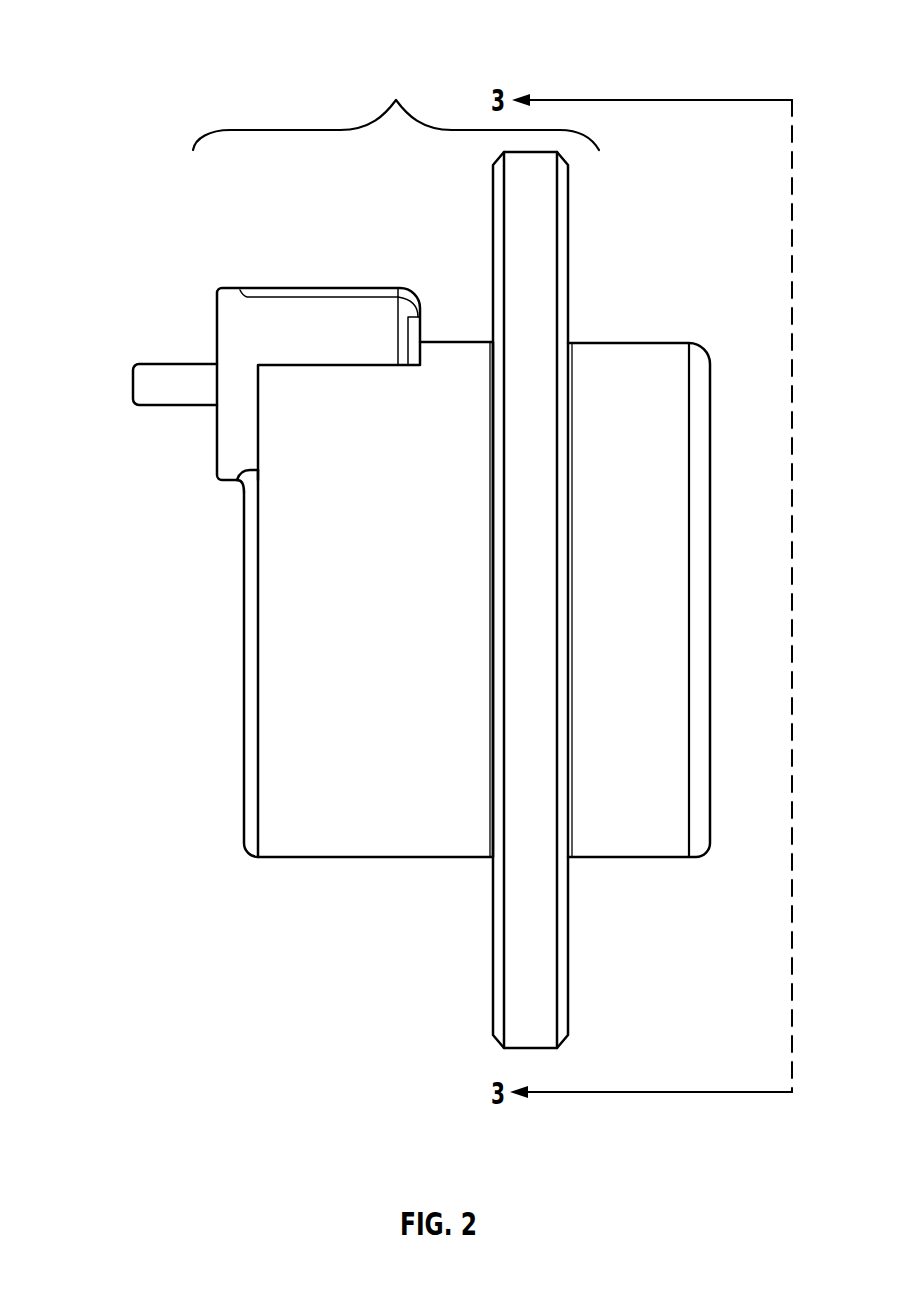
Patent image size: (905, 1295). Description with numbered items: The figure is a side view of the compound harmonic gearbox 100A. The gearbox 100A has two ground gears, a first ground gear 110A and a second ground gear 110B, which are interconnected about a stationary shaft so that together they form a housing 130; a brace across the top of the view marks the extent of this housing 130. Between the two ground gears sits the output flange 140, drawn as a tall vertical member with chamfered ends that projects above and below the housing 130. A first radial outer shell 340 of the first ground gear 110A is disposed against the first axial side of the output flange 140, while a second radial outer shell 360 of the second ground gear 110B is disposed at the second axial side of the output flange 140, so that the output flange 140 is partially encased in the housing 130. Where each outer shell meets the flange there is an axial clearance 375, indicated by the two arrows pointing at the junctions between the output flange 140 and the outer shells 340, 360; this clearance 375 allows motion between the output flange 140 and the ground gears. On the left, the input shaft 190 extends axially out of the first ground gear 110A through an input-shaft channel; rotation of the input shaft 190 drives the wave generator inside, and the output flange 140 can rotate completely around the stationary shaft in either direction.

The compound harmonic gearbox 100A is at (160, 44).
The housing 130 is at (396, 108).
The output flange 140 is at (493, 880).
The first ground gear 110A is at (290, 733).
The second ground gear 110B is at (610, 822).
The first radial outer shell 340 is at (244, 582).
The second radial outer shell 360 is at (634, 368).
The axial clearance 375 is at (484, 334).
The input shaft 190 is at (133, 386).